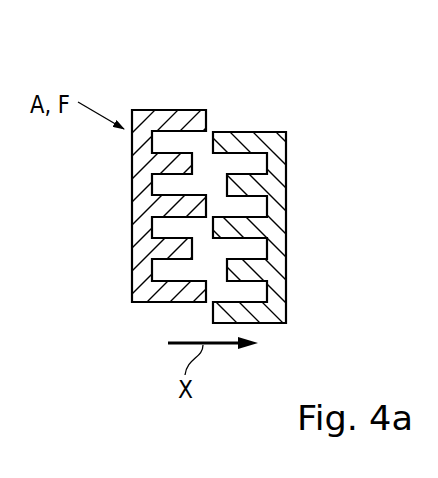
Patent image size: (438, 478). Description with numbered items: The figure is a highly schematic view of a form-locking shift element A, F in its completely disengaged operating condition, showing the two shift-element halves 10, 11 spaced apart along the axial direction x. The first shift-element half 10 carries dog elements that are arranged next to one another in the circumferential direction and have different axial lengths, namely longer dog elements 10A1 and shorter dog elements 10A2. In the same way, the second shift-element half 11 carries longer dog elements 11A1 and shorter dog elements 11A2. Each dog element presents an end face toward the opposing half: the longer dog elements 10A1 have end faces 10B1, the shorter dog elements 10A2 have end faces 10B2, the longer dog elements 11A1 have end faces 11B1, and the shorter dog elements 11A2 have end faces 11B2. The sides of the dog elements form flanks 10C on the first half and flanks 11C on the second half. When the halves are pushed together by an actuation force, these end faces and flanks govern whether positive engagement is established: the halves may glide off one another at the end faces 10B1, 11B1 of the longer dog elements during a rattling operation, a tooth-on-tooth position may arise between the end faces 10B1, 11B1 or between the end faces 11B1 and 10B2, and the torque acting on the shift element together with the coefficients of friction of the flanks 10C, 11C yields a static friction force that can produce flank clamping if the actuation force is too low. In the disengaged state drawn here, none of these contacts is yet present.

The first shift-element half 10 is at (143, 107).
The longer dog element of the first shift-element half 10A1 is at (160, 293).
The shorter dog element of the first shift-element half 10A2 is at (167, 162).
The end face of the longer dog element 10B1 is at (207, 207).
The end face of the shorter dog element 10B2 is at (193, 250).
The flank of the dog element 10C is at (193, 279).
The second shift-element half 11 is at (275, 129).
The longer dog element of the second shift-element half 11A1 is at (232, 138).
The shorter dog element of the second shift-element half 11A2 is at (247, 183).
The end face of the longer dog element 11B1 is at (213, 218).
The end face of the shorter dog element 11B2 is at (227, 182).
The flank of the dog element 11C is at (242, 301).